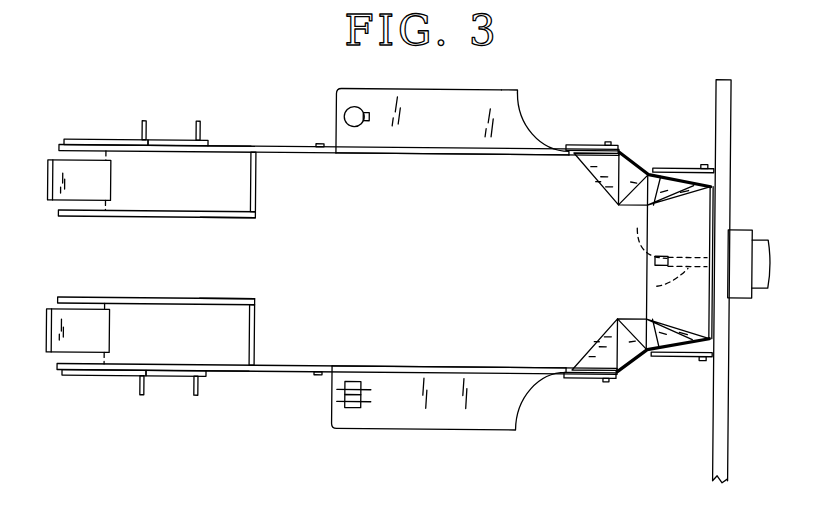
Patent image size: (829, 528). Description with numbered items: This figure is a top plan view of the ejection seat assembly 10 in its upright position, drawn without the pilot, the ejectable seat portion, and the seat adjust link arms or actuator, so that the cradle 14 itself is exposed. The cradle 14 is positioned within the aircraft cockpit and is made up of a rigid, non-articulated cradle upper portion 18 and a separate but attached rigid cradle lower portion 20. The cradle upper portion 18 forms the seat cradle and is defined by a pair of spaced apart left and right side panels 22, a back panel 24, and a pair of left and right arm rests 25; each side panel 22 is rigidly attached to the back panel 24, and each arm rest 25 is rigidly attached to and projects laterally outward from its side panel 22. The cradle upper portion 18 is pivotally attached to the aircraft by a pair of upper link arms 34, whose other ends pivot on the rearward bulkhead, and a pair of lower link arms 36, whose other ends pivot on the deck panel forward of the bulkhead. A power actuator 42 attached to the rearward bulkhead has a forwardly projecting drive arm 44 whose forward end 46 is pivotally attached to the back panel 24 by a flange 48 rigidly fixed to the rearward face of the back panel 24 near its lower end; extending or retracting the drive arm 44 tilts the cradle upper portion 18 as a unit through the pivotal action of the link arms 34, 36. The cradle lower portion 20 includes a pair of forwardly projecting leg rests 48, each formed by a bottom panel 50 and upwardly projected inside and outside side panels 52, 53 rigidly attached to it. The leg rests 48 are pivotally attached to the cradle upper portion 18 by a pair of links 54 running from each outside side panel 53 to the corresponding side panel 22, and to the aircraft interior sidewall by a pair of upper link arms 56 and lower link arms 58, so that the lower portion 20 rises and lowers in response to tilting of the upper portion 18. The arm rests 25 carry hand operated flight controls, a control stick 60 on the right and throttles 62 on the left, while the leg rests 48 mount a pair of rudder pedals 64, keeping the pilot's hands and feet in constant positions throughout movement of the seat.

The ejection seat assembly 10 is at (191, 463).
The cradle 14 is at (508, 90).
The cradle upper portion 18 is at (532, 125).
The cradle lower portion 20 is at (237, 138).
The side panels 22 is at (465, 158).
The back panel 24 is at (684, 203).
The arm rests 25 is at (427, 125).
The upper link arms 34 is at (688, 165).
The lower link arms 36 is at (593, 142).
The power actuator 42 is at (743, 233).
The drive arm 44 is at (655, 287).
The forward end 46 is at (654, 268).
The flange 48 is at (257, 195).
The bottom panel 50 is at (173, 195).
The inside side panel 52 is at (240, 221).
The outside side panel 53 is at (210, 143).
The links 54 is at (330, 154).
The upper link arms 56 is at (113, 141).
The lower link arms 58 is at (168, 141).
The control stick 60 is at (343, 114).
The throttles 62 is at (357, 409).
The rudder pedals 64 is at (53, 161).